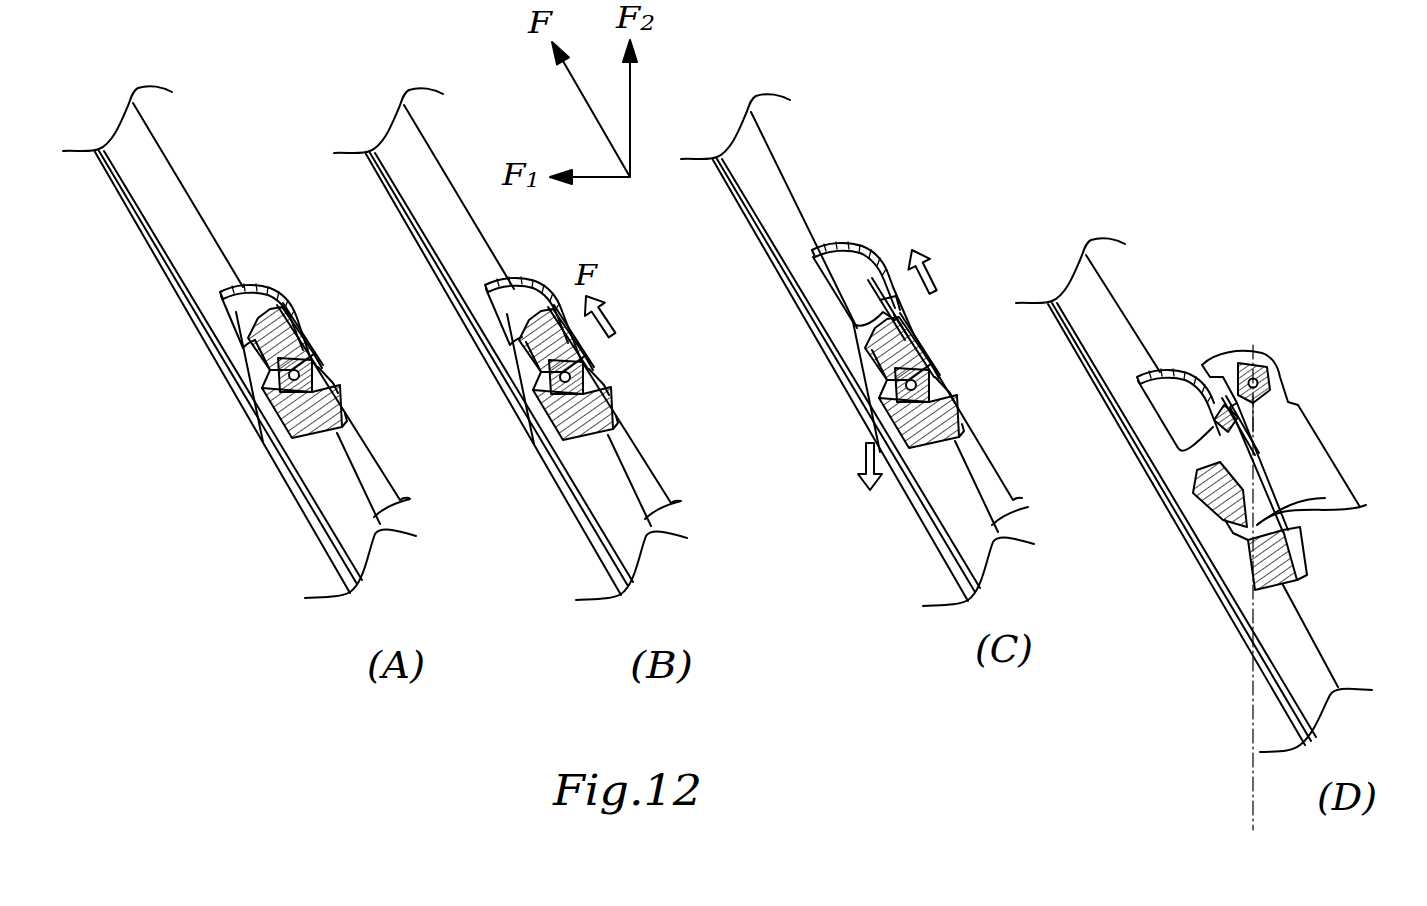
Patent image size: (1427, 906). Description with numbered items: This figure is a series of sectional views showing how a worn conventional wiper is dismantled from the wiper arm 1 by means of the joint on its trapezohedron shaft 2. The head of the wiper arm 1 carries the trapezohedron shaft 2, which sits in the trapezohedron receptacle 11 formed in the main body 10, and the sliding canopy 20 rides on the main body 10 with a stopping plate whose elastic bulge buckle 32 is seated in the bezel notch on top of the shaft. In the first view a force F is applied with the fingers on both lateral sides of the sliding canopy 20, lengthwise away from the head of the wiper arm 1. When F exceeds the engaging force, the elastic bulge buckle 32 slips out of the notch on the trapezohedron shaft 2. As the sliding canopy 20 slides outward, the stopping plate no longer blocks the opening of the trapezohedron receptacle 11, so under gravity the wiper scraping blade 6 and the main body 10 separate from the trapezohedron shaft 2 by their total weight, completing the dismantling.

The wiper arm 1 is at (1310, 441).
The trapezohedron shaft 2 is at (1250, 365).
The wiper scraping blade 6 is at (283, 464).
The main body 10 is at (252, 378).
The trapezohedron receptacle 11 is at (1325, 498).
The sliding canopy 20 is at (254, 298).
The elastic bulge buckle 32 is at (318, 362).